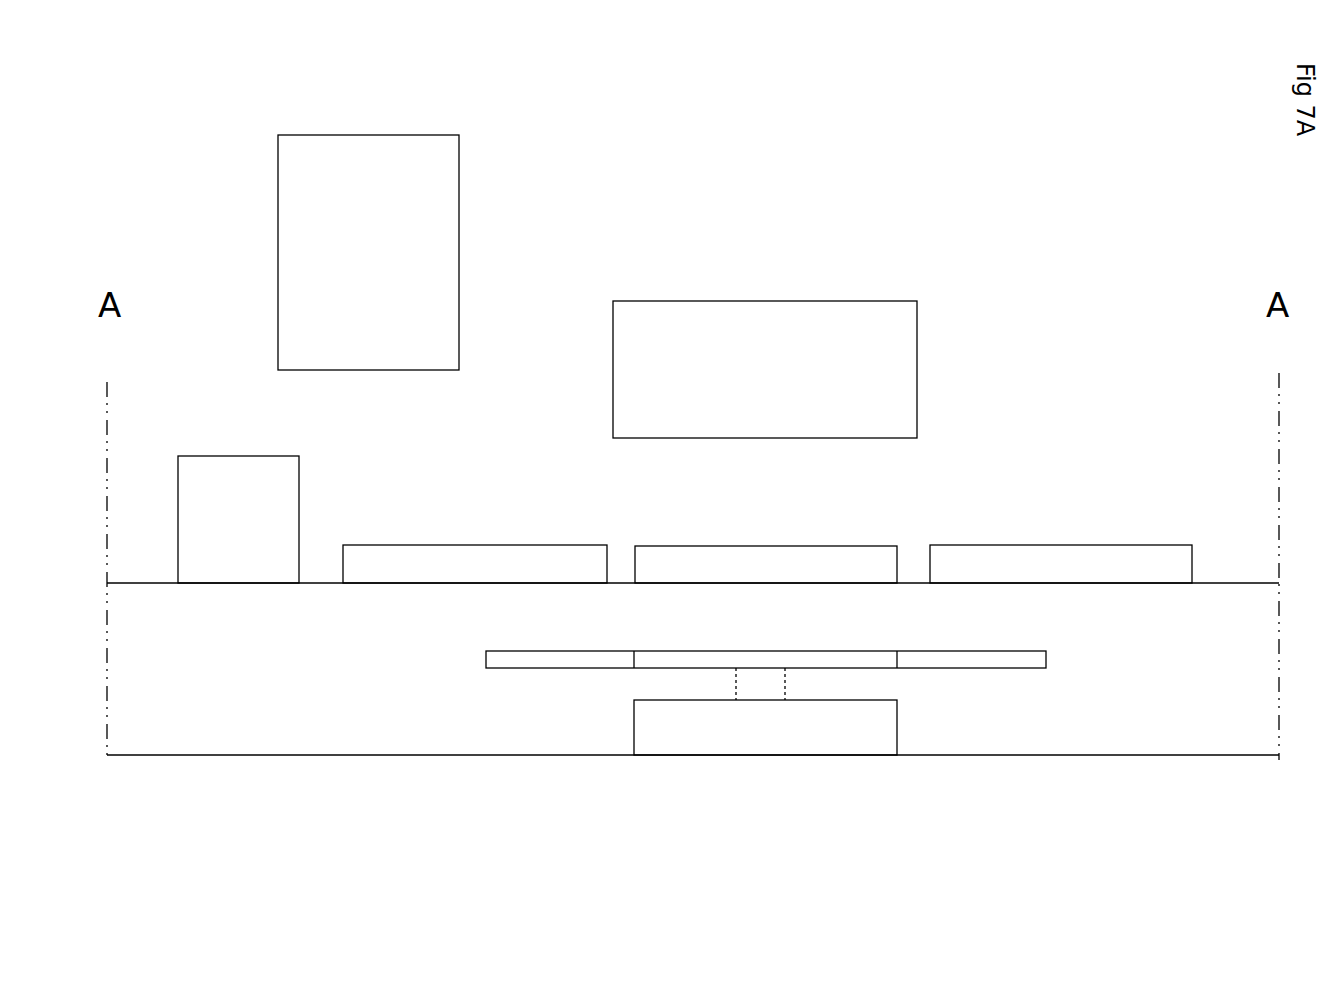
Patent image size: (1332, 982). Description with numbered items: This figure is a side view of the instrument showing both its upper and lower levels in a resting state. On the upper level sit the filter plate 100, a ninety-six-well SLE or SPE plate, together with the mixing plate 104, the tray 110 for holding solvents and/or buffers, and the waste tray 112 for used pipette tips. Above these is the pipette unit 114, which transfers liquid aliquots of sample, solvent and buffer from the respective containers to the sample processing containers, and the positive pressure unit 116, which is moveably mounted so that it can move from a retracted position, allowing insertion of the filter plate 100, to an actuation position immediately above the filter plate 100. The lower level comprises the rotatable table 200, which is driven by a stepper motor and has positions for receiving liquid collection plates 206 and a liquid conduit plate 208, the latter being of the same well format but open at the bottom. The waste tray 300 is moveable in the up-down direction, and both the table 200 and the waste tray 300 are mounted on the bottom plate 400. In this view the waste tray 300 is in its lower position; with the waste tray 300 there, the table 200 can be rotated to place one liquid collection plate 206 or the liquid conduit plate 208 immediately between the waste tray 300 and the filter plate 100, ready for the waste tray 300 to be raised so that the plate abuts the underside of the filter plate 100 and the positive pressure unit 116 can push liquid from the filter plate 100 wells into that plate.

The filter plate 100 is at (766, 565).
The mixing plate 104 is at (1061, 564).
The tray for holding solvents and/or buffers 110 is at (475, 564).
The waste tray for used pipette tips 112 is at (238, 519).
The pipette unit 114 is at (368, 252).
The positive pressure unit 116 is at (765, 369).
The rotatable table 200 is at (816, 647).
The liquid collection plate 206 is at (762, 636).
The liquid conduit plate 208 is at (800, 652).
The waste tray 300 is at (765, 711).
The bottom plate 400 is at (1060, 757).